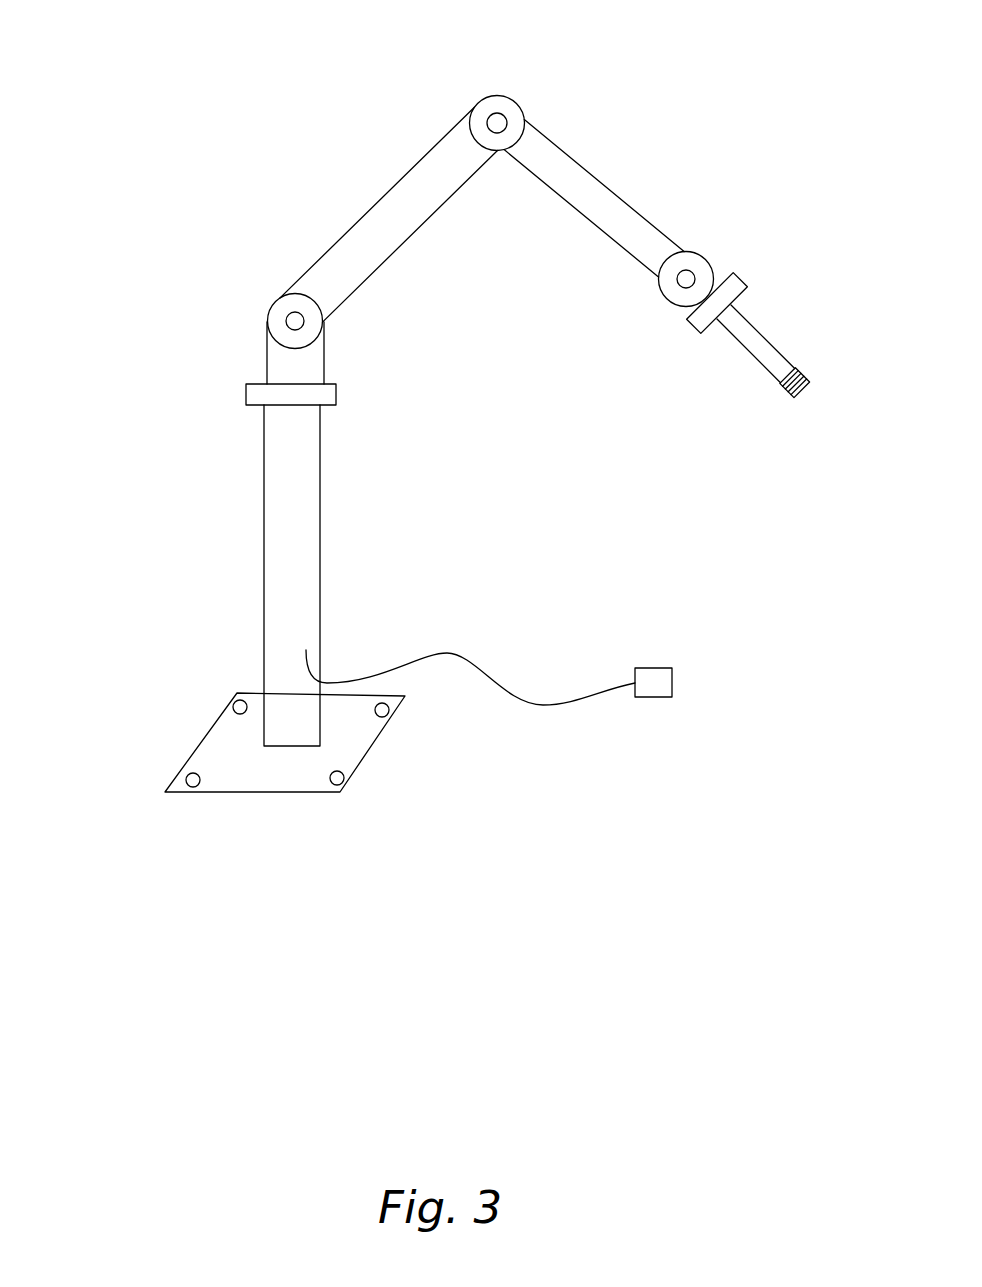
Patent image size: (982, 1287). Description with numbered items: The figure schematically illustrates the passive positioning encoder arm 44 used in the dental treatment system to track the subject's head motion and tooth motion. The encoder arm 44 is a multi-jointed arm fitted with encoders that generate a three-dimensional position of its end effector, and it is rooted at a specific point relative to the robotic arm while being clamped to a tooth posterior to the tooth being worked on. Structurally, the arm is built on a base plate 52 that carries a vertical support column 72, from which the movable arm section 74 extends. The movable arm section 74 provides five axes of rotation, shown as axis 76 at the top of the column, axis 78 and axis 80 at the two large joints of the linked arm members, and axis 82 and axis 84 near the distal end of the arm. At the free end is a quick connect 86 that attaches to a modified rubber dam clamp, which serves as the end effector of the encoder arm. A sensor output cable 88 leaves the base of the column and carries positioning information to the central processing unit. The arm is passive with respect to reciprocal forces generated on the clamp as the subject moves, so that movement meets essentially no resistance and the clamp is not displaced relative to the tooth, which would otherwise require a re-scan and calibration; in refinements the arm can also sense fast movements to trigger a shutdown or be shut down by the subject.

The passive positioning encoder arm 44 is at (265, 123).
The base plate 52 is at (205, 752).
The support column 72 is at (276, 562).
The movable arm section 74 is at (477, 275).
The axis of rotation 76 is at (255, 395).
The axis of rotation 78 is at (283, 313).
The axis of rotation 80 is at (495, 98).
The axis of rotation 82 is at (698, 263).
The axis of rotation 84 is at (690, 322).
The quick connect 86 is at (792, 393).
The sensor output cable 88 is at (477, 667).